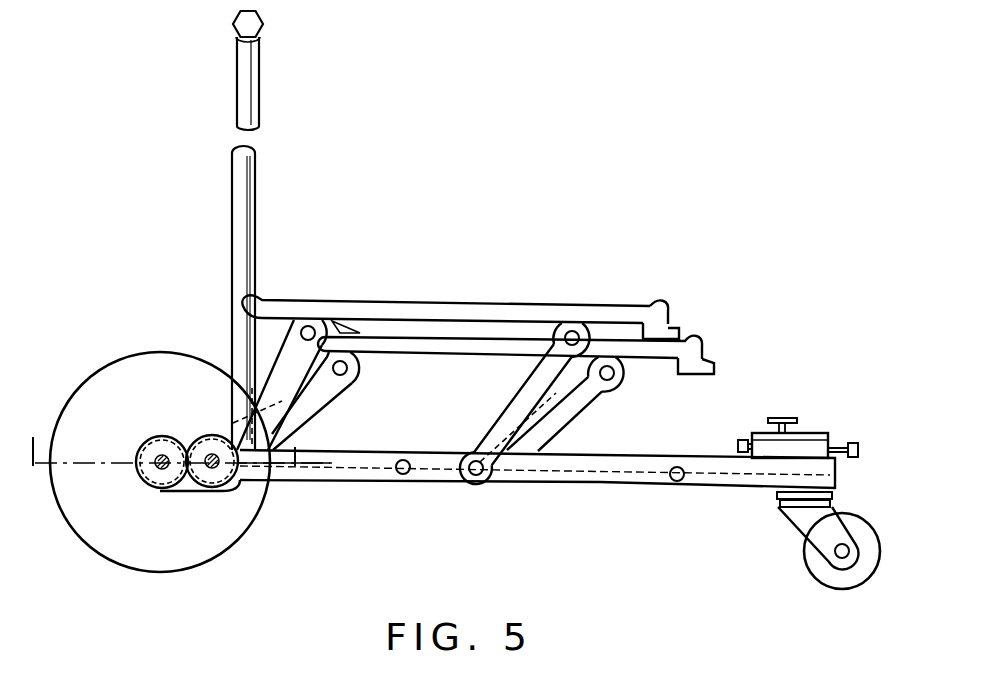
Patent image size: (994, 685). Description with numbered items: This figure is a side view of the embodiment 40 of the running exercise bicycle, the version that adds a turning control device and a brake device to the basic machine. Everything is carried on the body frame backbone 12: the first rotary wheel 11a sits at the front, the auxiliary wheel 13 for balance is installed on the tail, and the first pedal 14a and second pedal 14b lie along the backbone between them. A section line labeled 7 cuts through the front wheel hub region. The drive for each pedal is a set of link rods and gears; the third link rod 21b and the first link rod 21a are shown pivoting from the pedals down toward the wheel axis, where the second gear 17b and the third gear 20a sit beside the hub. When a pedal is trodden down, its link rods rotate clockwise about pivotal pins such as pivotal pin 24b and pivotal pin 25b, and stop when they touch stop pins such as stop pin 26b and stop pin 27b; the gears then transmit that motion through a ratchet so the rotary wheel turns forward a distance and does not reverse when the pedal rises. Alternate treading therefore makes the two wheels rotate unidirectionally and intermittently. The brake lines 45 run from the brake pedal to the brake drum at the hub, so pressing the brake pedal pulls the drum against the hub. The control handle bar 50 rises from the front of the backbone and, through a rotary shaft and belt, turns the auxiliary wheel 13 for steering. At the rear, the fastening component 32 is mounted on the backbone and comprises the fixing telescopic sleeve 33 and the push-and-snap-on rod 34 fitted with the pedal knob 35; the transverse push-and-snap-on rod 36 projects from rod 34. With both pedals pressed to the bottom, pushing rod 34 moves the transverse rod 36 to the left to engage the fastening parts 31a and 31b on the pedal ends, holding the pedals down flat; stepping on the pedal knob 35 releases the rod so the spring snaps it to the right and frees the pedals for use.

The section line 7- 7 is at (178, 478).
The first rotary wheel 11a is at (125, 373).
The body frame backbone 12 is at (582, 484).
The auxiliary wheel 13 is at (822, 577).
The first pedal 14a is at (467, 350).
The second pedal 14b is at (483, 310).
The second gear 17b is at (160, 493).
The third gear 20a is at (210, 491).
The first link rod 21a is at (290, 400).
The third link rod 21b is at (298, 322).
The pivotal pin 24b is at (218, 467).
The pivotal pin 25b is at (476, 478).
The stop pin 26b is at (403, 476).
The stop pin 27b is at (678, 483).
The fastening part 31a is at (710, 360).
The fastening part 31b is at (672, 323).
The fastening component 32 is at (808, 425).
The fixing telescopic sleeve 33 is at (822, 447).
The push-and-snap-on rod 34 is at (845, 455).
The pedal knob 35 is at (782, 417).
The transverse push-and-snap-on rod 36 is at (742, 438).
The running exercise bicycle embodiment 40 is at (623, 106).
The brake lines 45 is at (290, 400).
The control handle bar 50 is at (255, 194).